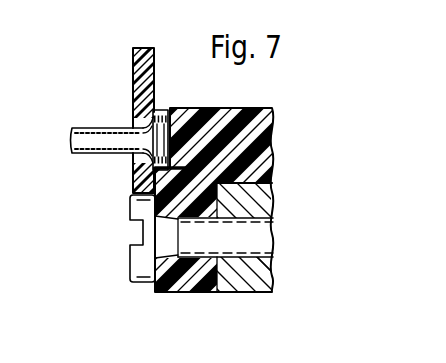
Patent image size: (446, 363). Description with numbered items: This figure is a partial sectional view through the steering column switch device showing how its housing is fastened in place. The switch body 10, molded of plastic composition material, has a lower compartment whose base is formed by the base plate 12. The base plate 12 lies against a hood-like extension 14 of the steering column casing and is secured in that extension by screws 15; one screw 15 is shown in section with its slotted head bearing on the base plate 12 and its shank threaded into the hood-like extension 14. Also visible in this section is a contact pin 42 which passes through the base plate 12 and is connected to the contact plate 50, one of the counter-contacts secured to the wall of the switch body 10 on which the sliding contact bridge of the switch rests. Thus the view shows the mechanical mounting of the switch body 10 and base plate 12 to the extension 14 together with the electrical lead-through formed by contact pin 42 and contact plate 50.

The switch body 10 is at (202, 277).
The base plate 12 is at (131, 83).
The hood-like extension 14 is at (250, 278).
The screw 15 is at (137, 222).
The contact pin 42 is at (89, 143).
The contact plate 50 is at (161, 113).